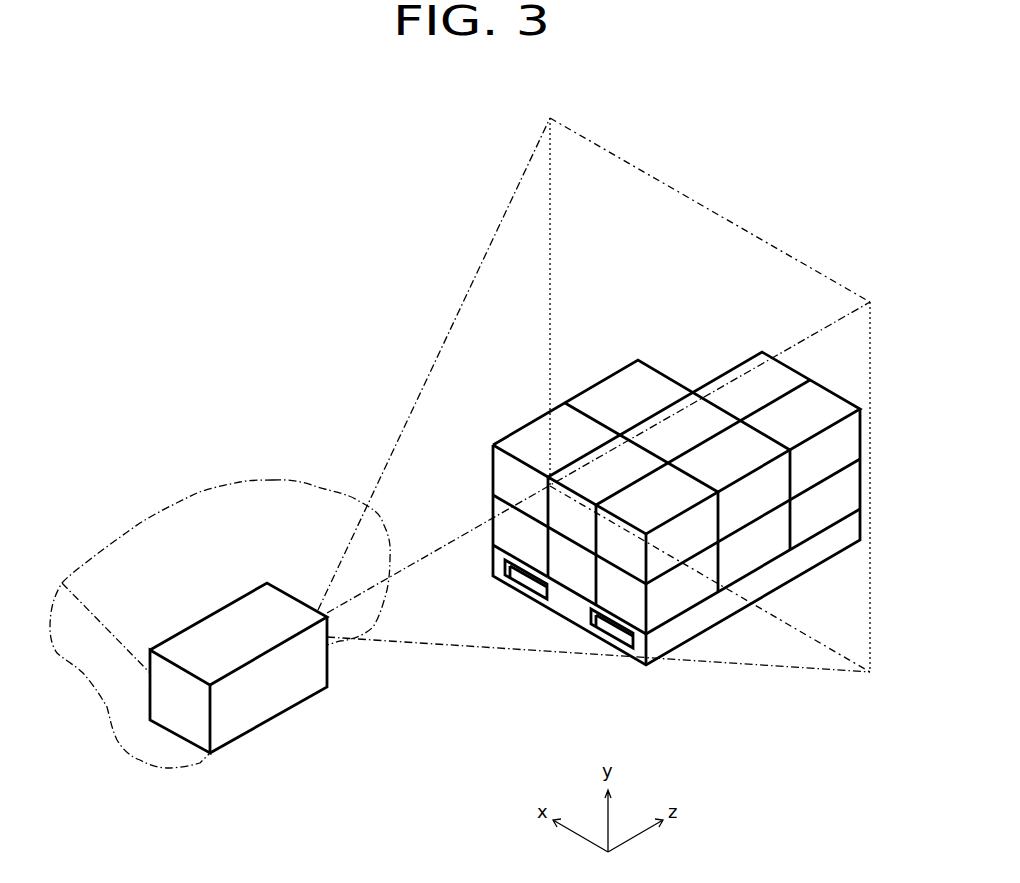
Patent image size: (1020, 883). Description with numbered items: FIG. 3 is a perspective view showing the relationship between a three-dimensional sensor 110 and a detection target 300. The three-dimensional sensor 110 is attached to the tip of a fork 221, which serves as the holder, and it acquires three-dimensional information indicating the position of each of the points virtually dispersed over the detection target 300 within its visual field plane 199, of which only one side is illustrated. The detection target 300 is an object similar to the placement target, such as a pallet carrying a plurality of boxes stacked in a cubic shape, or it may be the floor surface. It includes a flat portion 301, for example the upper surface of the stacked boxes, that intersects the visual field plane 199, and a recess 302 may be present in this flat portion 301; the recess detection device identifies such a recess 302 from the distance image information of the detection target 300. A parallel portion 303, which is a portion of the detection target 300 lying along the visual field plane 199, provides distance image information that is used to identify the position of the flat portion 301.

The three-dimensional sensor 110 is at (285, 703).
The visual field plane 199 is at (758, 235).
The fork 221 is at (280, 490).
The detection target 300 is at (676, 452).
The flat portion 301 is at (600, 401).
The recess 302 is at (706, 368).
The parallel portion 303 is at (604, 598).